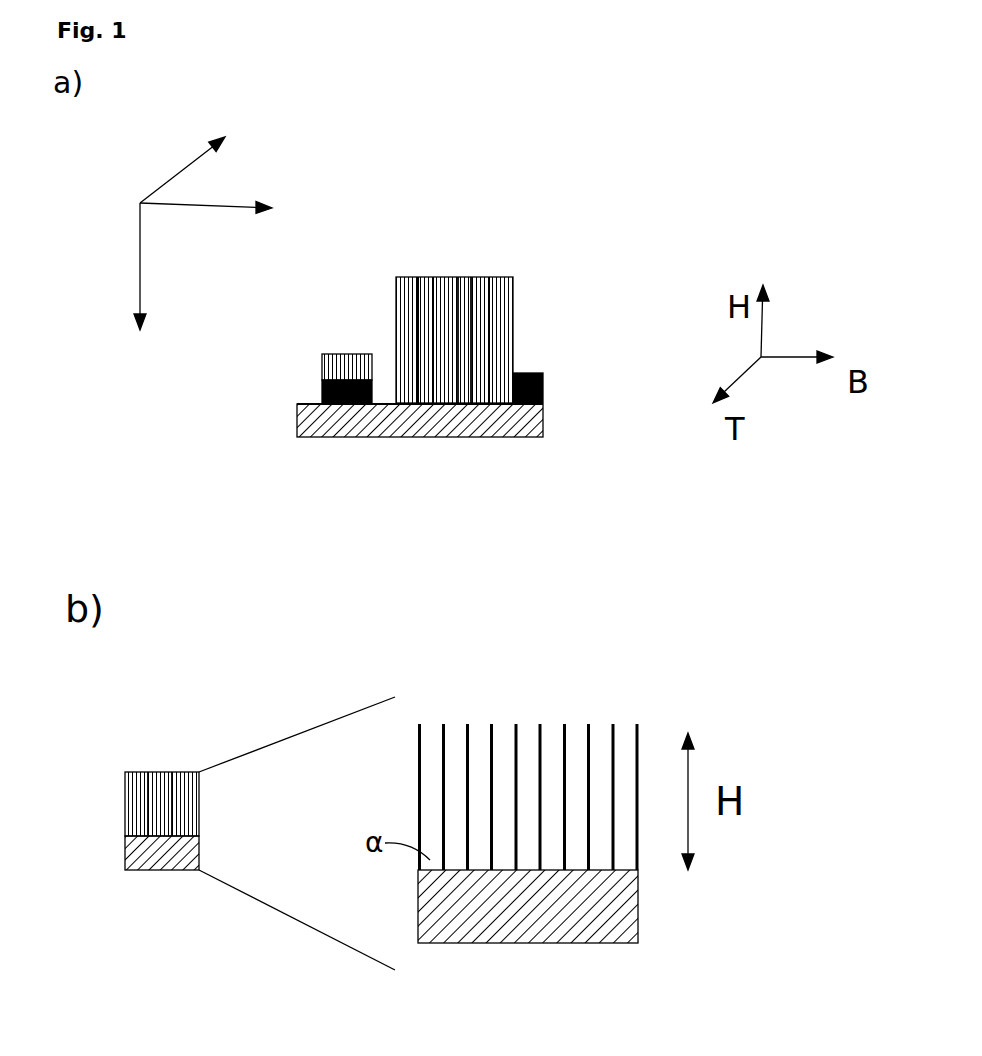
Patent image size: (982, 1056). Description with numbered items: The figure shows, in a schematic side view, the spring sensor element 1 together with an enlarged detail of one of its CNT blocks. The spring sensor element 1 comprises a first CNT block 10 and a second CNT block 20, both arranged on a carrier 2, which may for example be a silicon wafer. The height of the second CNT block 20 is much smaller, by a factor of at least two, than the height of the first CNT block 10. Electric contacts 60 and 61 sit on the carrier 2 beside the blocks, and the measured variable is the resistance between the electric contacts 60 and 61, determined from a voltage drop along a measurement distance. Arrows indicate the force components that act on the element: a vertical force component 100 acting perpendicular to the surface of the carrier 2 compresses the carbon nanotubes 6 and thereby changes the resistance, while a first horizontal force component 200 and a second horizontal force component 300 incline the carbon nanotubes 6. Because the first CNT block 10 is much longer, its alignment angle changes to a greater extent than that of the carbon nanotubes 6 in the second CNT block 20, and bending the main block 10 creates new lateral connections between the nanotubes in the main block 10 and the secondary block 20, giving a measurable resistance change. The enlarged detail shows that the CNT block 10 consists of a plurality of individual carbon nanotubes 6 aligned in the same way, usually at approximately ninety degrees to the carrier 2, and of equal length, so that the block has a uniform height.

The spring sensor element 1 is at (349, 163).
The carrier 2 is at (451, 424).
The carbon nanotubes 6 is at (446, 730).
The first CNT block 10 is at (466, 297).
The second CNT block 20 is at (357, 352).
The electric contact 60 is at (320, 398).
The electric contact 61 is at (545, 390).
The vertical force component 100 is at (107, 266).
The first horizontal force component 200 is at (210, 237).
The second horizontal force component 300 is at (139, 170).